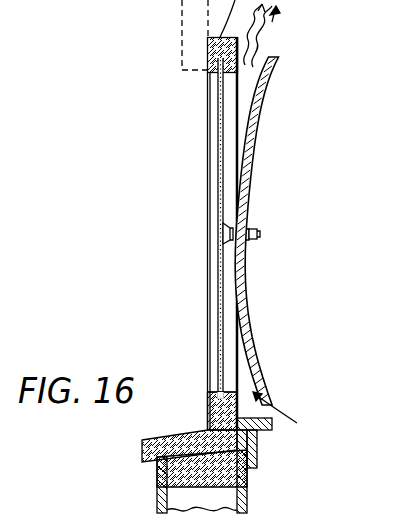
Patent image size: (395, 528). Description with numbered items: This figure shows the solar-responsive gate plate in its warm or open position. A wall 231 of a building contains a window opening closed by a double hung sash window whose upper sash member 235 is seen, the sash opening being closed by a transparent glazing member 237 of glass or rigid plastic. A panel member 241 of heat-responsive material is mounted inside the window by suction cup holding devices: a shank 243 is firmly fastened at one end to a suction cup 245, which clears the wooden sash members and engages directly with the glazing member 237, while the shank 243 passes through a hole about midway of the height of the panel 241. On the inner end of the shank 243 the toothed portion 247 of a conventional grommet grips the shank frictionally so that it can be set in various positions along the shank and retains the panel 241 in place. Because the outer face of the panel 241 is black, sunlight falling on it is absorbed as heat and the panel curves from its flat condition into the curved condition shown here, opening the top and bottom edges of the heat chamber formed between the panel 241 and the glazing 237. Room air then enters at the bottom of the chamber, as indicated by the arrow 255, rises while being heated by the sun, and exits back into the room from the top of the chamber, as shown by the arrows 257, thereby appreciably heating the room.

The wall 231 is at (156, 487).
The upper sash member 235 is at (181, 22).
The glazing member 237 is at (218, 165).
The panel member 241 is at (253, 142).
The shank 243 is at (259, 235).
The suction cup 245 is at (227, 237).
The toothed portion of grommet 247 is at (247, 224).
The arrow 255 is at (283, 412).
The arrows 257 is at (270, 33).